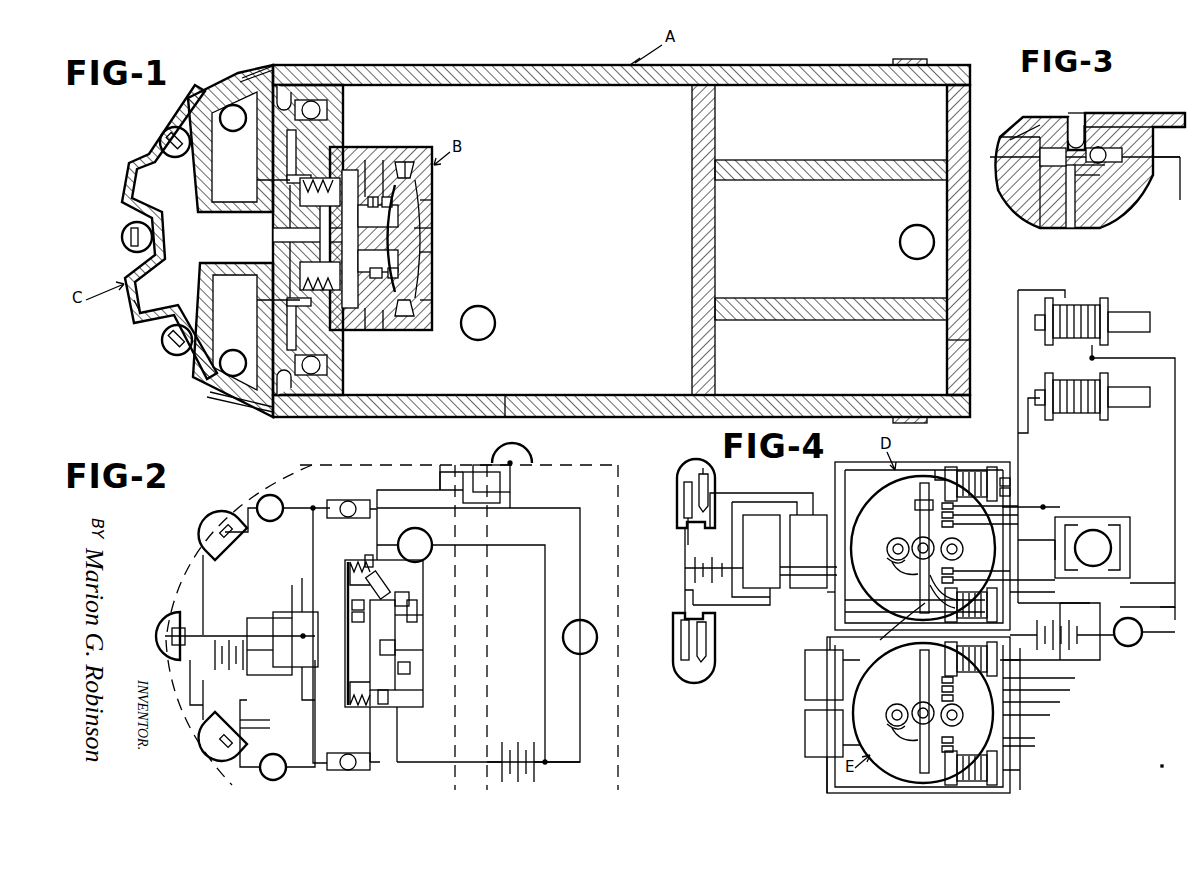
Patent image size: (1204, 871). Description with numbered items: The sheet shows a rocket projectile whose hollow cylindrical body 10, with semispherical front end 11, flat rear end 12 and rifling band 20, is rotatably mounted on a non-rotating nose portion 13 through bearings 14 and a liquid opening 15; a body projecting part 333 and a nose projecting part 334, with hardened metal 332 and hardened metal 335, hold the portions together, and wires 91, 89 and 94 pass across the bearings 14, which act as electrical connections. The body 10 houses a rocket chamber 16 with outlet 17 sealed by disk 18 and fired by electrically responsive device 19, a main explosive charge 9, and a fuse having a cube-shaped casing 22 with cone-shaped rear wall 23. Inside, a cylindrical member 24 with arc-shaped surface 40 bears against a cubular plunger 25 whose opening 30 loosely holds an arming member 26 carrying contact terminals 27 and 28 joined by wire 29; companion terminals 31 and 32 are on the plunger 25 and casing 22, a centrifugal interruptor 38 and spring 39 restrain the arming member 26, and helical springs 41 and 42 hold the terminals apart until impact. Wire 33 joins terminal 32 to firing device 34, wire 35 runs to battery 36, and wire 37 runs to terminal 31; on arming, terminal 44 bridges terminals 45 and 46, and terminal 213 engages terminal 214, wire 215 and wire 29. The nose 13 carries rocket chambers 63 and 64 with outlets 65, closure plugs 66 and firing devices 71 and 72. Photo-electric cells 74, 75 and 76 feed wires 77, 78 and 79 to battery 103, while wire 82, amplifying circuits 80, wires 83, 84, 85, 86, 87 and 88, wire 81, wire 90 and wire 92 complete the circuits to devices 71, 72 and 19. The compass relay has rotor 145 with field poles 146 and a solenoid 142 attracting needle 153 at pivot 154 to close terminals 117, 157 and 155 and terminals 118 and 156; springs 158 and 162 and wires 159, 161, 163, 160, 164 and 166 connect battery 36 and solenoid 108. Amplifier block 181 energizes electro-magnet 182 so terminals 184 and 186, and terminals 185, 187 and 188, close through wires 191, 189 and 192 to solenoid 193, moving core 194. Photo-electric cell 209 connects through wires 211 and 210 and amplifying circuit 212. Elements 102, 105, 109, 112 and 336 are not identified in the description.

In FIG. 1, the main explosive charge 9 is at (505, 395).
In FIG. 1, the hollow cylindrical body 10 is at (505, 65).
In FIG. 3, the hollow cylindrical body 10 is at (1170, 113).
In FIG. 2, the hollow cylindrical body 10 is at (410, 465).
In FIG. 1, the semispherical front end 11 is at (133, 300).
In FIG. 2, the semispherical front end 11 is at (170, 585).
In FIG. 1, the flat rear end 12 is at (958, 358).
In FIG. 2, the flat rear end 12 is at (618, 510).
In FIG. 1, the nose portion 13 is at (137, 312).
In FIG. 3, the nose portion 13 is at (1025, 170).
In FIG. 1, the bearings 14 is at (314, 100).
In FIG. 3, the bearings 14 is at (1112, 200).
In FIG. 2, the bearings 14 is at (348, 500).
In FIG. 1, the opening between the two portions 15 is at (345, 100).
In FIG. 3, the opening between the two portions 15 is at (1085, 205).
In FIG. 1, the rocket chamber 16 is at (727, 266).
In FIG. 1, the outlet 17 is at (948, 197).
In FIG. 1, the closure element or disk 18 is at (960, 245).
In FIG. 3, the closure element or disk 18 is at (1000, 245).
In FIG. 1, the electrically responsive device 19 is at (912, 247).
In FIG. 2, the electrically responsive device 19 is at (585, 625).
In FIG. 4, the electrically responsive device 19 is at (1133, 646).
In FIG. 1, the rifling band 20 is at (910, 59).
In FIG. 1, the fuse casing 22 is at (380, 178).
In FIG. 1, the cone-shaped rear wall 23 is at (430, 274).
In FIG. 1, the solid cylindrical member 24 is at (430, 215).
In FIG. 1, the cubular plunger 25 is at (378, 165).
In FIG. 1, the cylindrical arming member 26 is at (384, 332).
In FIG. 2, the cylindrical arming member 26 is at (410, 668).
In FIG. 1, the contact terminal 27 is at (432, 182).
In FIG. 2, the contact terminal 27 is at (402, 592).
In FIG. 1, the contact terminal 28 is at (285, 237).
In FIG. 2, the contact terminal 28 is at (348, 636).
In FIG. 1, the connecting wire 29 is at (318, 245).
In FIG. 2, the connecting wire 29 is at (412, 618).
In FIG. 1, the hollow cylindrical opening 30 is at (292, 229).
In FIG. 2, the hollow cylindrical opening 30 is at (412, 690).
In FIG. 1, the contact terminal 31 is at (432, 250).
In FIG. 2, the contact terminal 31 is at (412, 615).
In FIG. 1, the contact terminal 32 is at (292, 245).
In FIG. 2, the contact terminal 32 is at (352, 618).
In FIG. 2, the wire 33 is at (335, 560).
In FIG. 1, the electrically responsive firing device 34 is at (496, 323).
In FIG. 2, the electrically responsive firing device 34 is at (425, 540).
In FIG. 2, the wire 35 is at (498, 545).
In FIG. 2, the battery 36 is at (507, 742).
In FIG. 4, the battery 36 is at (1070, 690).
In FIG. 2, the wire 37 is at (425, 755).
In FIG. 1, the centrifugal interruptor 38 is at (365, 332).
In FIG. 2, the centrifugal interruptor 38 is at (385, 588).
In FIG. 1, the spring 39 is at (343, 368).
In FIG. 2, the spring 39 is at (368, 555).
In FIG. 1, the arc-shaped surface 40 is at (432, 297).
In FIG. 1, the helical spring 41 is at (290, 182).
In FIG. 2, the helical spring 41 is at (348, 572).
In FIG. 1, the helical spring 42 is at (300, 300).
In FIG. 2, the helical spring 42 is at (348, 695).
In FIG. 1, the contact terminal 44 is at (428, 238).
In FIG. 2, the contact terminal 44 is at (410, 655).
In FIG. 1, the contact terminal 45 is at (352, 180).
In FIG. 2, the contact terminal 45 is at (370, 700).
In FIG. 1, the contact terminal 46 is at (405, 165).
In FIG. 2, the contact terminal 46 is at (398, 688).
In FIG. 1, the rocket chamber 63 is at (218, 180).
In FIG. 1, the rocket chamber 64 is at (220, 303).
In FIG. 1, the outlets 65 is at (248, 80).
In FIG. 1, the closure plugs 66 is at (233, 80).
In FIG. 1, the electrically responsive firing device 71 is at (235, 350).
In FIG. 2, the electrically responsive firing device 71 is at (280, 756).
In FIG. 1, the electrically responsive firing device 72 is at (233, 131).
In FIG. 2, the electrically responsive firing device 72 is at (275, 497).
In FIG. 1, the photo-electric cell 74 is at (163, 133).
In FIG. 2, the photo-electric cell 74 is at (218, 520).
In FIG. 4, the photo-electric cell 74 is at (680, 482).
In FIG. 1, the photo-electric cell 75 is at (124, 236).
In FIG. 2, the photo-electric cell 75 is at (162, 635).
In FIG. 1, the photo-electric cell 76 is at (168, 350).
In FIG. 2, the photo-electric cell 76 is at (220, 750).
In FIG. 4, the photo-electric cell 76 is at (688, 668).
In FIG. 2, the wire 77 is at (210, 598).
In FIG. 4, the wire 77 is at (685, 557).
In FIG. 2, the wire 78 is at (205, 722).
In FIG. 4, the wire 78 is at (680, 612).
In FIG. 2, the wire 79 is at (191, 682).
In FIG. 2, the amplifying circuits 80 is at (302, 630).
In FIG. 2, the wire 81 is at (395, 755).
In FIG. 4, the wire 81 is at (1053, 650).
In FIG. 2, the wire 82 is at (244, 668).
In FIG. 4, the wire 82 is at (726, 576).
In FIG. 2, the wire 83 is at (255, 614).
In FIG. 4, the wire 83 is at (732, 502).
In FIG. 2, the wire 84 is at (238, 720).
In FIG. 4, the wire 84 is at (758, 597).
In FIG. 2, the wire 85 is at (266, 728).
In FIG. 4, the wire 85 is at (1058, 507).
In FIG. 2, the wire 86 is at (302, 612).
In FIG. 2, the wire 87 is at (220, 635).
In FIG. 2, the wire 88 is at (302, 685).
In FIG. 4, the wire 88 is at (1152, 585).
In FIG. 3, the common wire 89 is at (1030, 185).
In FIG. 2, the common wire 89 is at (310, 580).
In FIG. 4, the common wire 89 is at (1033, 543).
In FIG. 2, the wire 90 is at (313, 706).
In FIG. 4, the wire 90 is at (892, 563).
In FIG. 3, the wire 91 is at (1025, 140).
In FIG. 2, the wire 91 is at (305, 500).
In FIG. 2, the wire 92 is at (580, 735).
In FIG. 4, the wire 92 is at (1106, 637).
In FIG. 3, the common conductor wire 94 is at (1180, 190).
In FIG. 2, the common conductor wire 94 is at (580, 550).
In FIG. 4, the common conductor wire 94 is at (1175, 607).
In FIG. 4, the lamp lead 102 is at (686, 505).
In FIG. 2, the battery 103 is at (242, 635).
In FIG. 4, the battery 103 is at (693, 605).
In FIG. 4, the relay 105 is at (810, 515).
In FIG. 4, the solenoid 108 is at (1080, 413).
In FIG. 4, the lamp filament 109 is at (703, 468).
In FIG. 4, the solenoid plunger 112 is at (1130, 407).
In FIG. 4, the contact terminal 117 is at (960, 467).
In FIG. 4, the contact terminal 118 is at (948, 528).
In FIG. 4, the electro-magnet 142 is at (1006, 471).
In FIG. 4, the rotor 145 is at (1100, 535).
In FIG. 4, the field poles 146 is at (1080, 520).
In FIG. 4, the magnetized compass needle 153 is at (928, 480).
In FIG. 4, the pivot 154 is at (918, 535).
In FIG. 4, the contact terminal 155 is at (923, 490).
In FIG. 4, the contact terminal 156 is at (918, 518).
In FIG. 4, the contact terminal 157 is at (940, 475).
In FIG. 4, the helical spring 158 is at (888, 549).
In FIG. 4, the wire 159 is at (910, 553).
In FIG. 4, the wire 160 is at (1043, 432).
In FIG. 4, the wire 161 is at (899, 667).
In FIG. 4, the helical spring 162 is at (963, 550).
In FIG. 4, the wire 163 is at (1118, 685).
In FIG. 4, the wire 164 is at (1090, 358).
In FIG. 4, the wire 166 is at (1174, 622).
In FIG. 4, the amplifier block 181 is at (763, 515).
In FIG. 4, the electro-magnet 182 is at (1002, 618).
In FIG. 4, the contact terminal 184 is at (930, 582).
In FIG. 4, the contact terminal 185 is at (930, 595).
In FIG. 4, the contact terminal 186 is at (880, 602).
In FIG. 4, the contact terminal 187 is at (880, 613).
In FIG. 4, the contact terminal 188 is at (895, 640).
In FIG. 4, the wire 189 is at (922, 714).
In FIG. 4, the wire 191 is at (1040, 507).
In FIG. 4, the wire 192 is at (1018, 415).
In FIG. 4, the solenoid 193 is at (1078, 305).
In FIG. 4, the movable soft iron core 194 is at (1125, 312).
In FIG. 2, the photo-electric cell 209 is at (495, 460).
In FIG. 2, the wire 210 is at (440, 465).
In FIG. 2, the wire 211 is at (510, 478).
In FIG. 2, the amplifying circuit 212 is at (510, 492).
In FIG. 2, the contact terminal 213 is at (390, 645).
In FIG. 2, the contact terminal 214 is at (386, 652).
In FIG. 2, the wire 215 is at (352, 602).
In FIG. 3, the hardened metal 332 is at (1045, 140).
In FIG. 3, the projecting part 333 is at (1078, 125).
In FIG. 3, the projecting part 334 is at (1100, 147).
In FIG. 3, the hardened metal 335 is at (1125, 127).
In FIG. 3, the slot 336 is at (1066, 222).